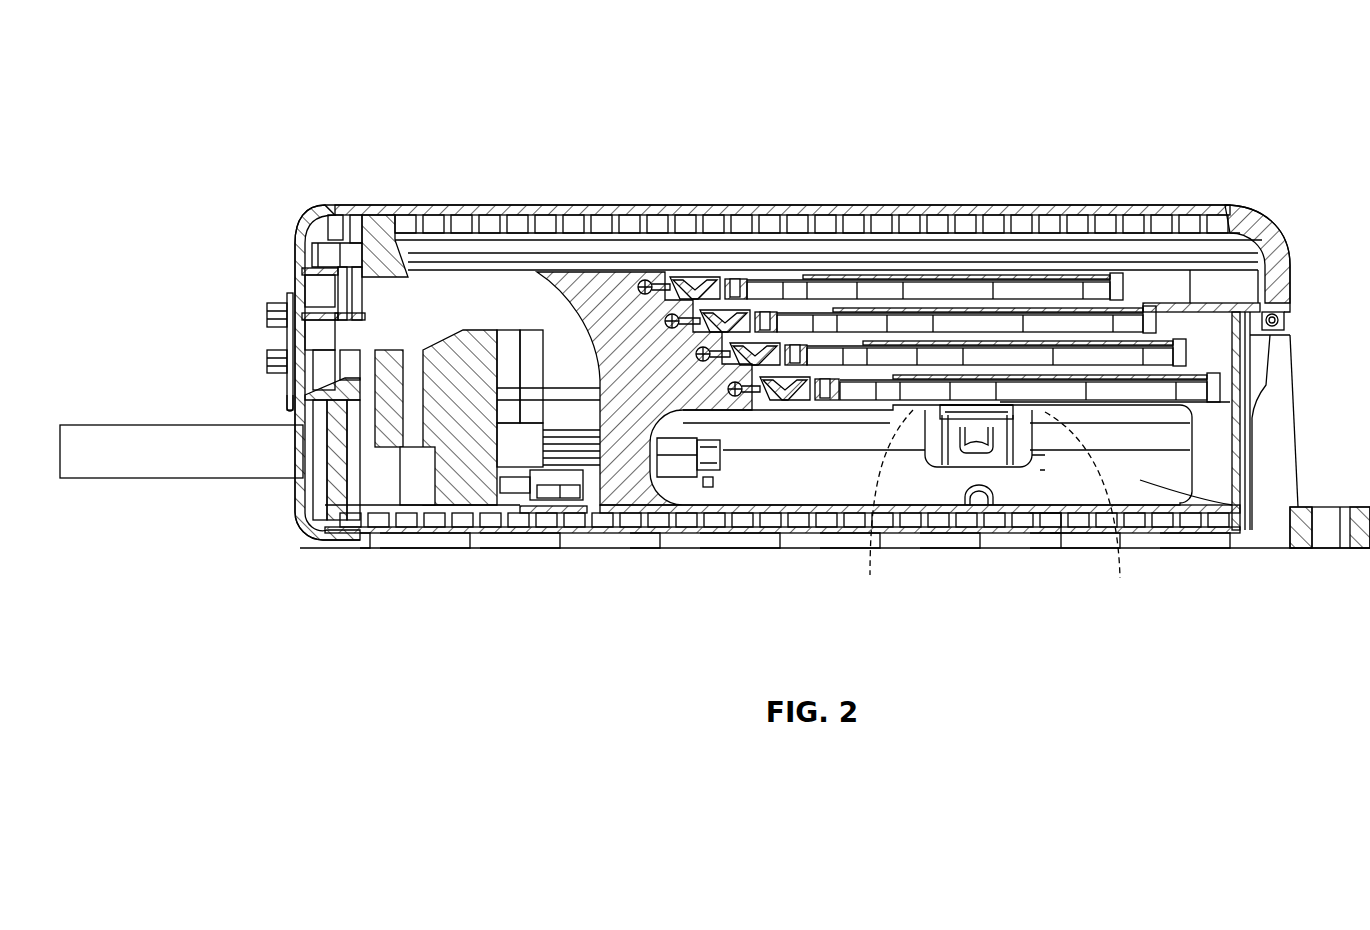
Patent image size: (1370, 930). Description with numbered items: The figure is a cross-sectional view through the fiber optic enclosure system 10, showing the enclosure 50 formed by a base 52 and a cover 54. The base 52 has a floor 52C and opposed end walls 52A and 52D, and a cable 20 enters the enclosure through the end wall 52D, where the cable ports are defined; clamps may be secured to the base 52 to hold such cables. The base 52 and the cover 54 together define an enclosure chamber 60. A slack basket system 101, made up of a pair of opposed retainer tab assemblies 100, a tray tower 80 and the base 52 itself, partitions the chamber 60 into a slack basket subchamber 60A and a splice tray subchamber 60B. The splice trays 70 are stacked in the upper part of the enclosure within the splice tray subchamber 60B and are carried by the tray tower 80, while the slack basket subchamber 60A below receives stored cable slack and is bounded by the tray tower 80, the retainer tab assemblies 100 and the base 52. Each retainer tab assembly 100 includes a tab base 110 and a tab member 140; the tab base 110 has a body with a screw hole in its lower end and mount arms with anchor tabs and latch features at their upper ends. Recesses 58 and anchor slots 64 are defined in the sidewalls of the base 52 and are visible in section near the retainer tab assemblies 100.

The fiber optic enclosure system 10 is at (968, 62).
The enclosure 50 is at (1027, 112).
The cover 54 is at (657, 203).
The base 52 is at (1063, 548).
The end wall 52A is at (1285, 453).
The floor 52C is at (965, 525).
The end wall 52D is at (303, 422).
The cable 20 is at (143, 467).
The enclosure chamber 60 is at (641, 495).
The slack basket subchamber 60A is at (830, 487).
The splice tray subchamber 60B is at (1165, 292).
The splice tray 70 is at (830, 292).
The tray tower 80 is at (583, 513).
The retainer tab assembly 100 is at (915, 487).
The slack basket system 101 is at (713, 490).
The tab base 110 is at (1007, 485).
The tab member 140 is at (940, 410).
The recess 58 is at (1040, 485).
The anchor slot 64 is at (995, 503).